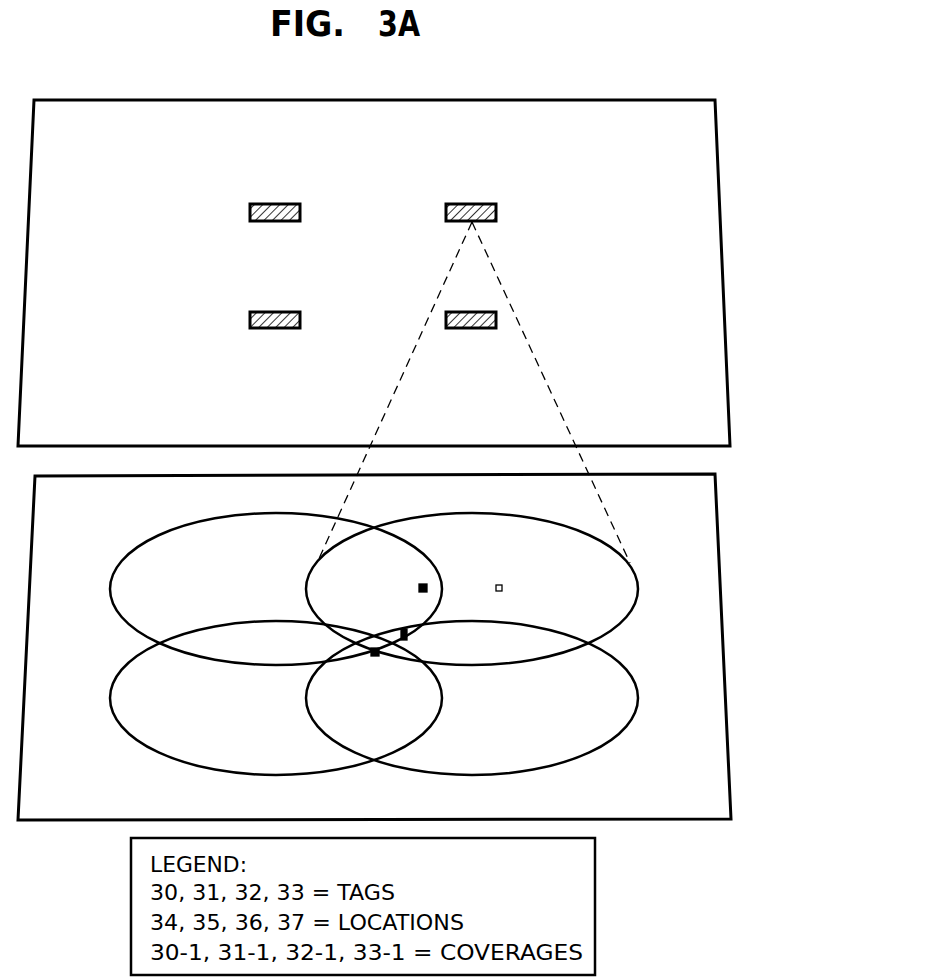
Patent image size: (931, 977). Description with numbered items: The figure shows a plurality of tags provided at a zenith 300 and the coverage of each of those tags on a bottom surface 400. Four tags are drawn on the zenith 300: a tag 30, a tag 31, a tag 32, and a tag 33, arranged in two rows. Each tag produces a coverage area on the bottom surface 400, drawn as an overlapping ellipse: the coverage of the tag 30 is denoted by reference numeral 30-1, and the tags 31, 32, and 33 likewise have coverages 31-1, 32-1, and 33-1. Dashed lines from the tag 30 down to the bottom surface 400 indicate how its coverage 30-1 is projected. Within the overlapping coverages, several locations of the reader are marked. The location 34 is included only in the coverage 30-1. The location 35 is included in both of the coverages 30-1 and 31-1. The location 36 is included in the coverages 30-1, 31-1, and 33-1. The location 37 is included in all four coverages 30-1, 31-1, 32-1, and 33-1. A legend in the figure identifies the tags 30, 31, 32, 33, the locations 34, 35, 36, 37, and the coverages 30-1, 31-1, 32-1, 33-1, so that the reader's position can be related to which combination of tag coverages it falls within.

The zenith 300 is at (562, 100).
The bottom surface 400 is at (721, 547).
The tag 30 is at (471, 204).
The tag 31 is at (272, 204).
The tag 32 is at (276, 328).
The tag 33 is at (470, 328).
The location of the reader 34 is at (502, 590).
The location of the reader 35 is at (418, 584).
The location of the reader 36 is at (407, 636).
The location of the reader 37 is at (375, 657).
The coverage 30-1 is at (608, 541).
The coverage 31-1 is at (143, 547).
The coverage 32-1 is at (126, 737).
The coverage 33-1 is at (567, 762).